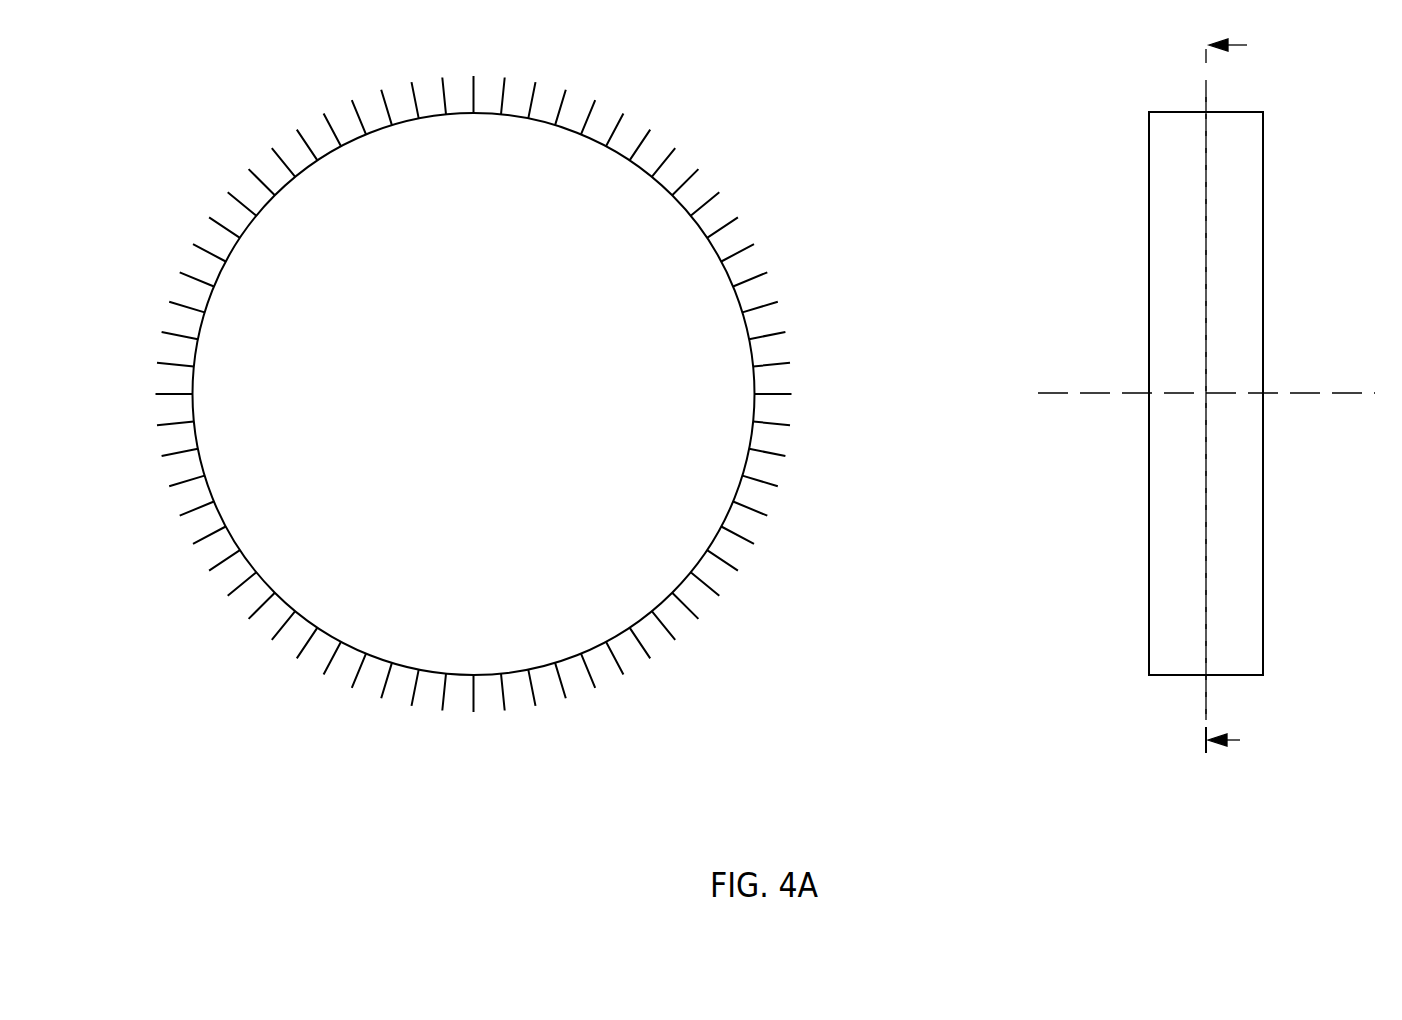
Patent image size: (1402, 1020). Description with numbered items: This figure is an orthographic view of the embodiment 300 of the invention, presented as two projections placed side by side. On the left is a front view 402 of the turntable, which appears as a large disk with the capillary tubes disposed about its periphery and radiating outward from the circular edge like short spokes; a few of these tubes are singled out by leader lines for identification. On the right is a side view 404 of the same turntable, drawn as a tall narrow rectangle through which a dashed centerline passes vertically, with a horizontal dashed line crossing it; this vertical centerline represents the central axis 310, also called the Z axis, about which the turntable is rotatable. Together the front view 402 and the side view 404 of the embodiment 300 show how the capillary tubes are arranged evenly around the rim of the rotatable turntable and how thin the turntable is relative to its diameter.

The embodiment 300 is at (473, 427).
The central axis 310 is at (1068, 393).
The front view 402 is at (504, 392).
The side view 404 is at (1147, 393).